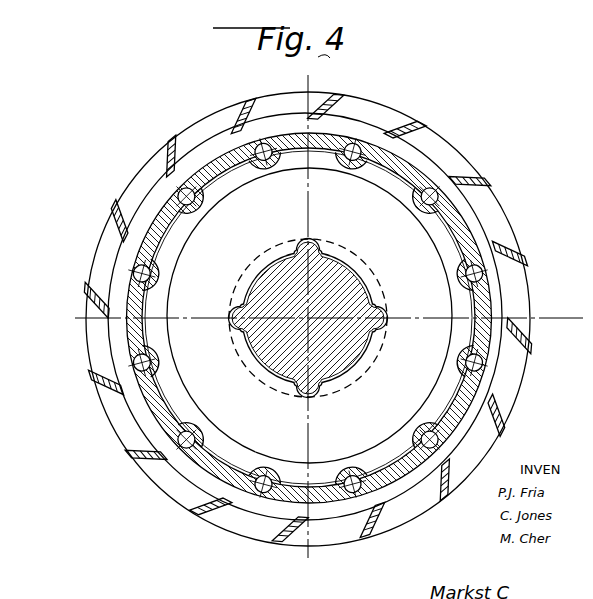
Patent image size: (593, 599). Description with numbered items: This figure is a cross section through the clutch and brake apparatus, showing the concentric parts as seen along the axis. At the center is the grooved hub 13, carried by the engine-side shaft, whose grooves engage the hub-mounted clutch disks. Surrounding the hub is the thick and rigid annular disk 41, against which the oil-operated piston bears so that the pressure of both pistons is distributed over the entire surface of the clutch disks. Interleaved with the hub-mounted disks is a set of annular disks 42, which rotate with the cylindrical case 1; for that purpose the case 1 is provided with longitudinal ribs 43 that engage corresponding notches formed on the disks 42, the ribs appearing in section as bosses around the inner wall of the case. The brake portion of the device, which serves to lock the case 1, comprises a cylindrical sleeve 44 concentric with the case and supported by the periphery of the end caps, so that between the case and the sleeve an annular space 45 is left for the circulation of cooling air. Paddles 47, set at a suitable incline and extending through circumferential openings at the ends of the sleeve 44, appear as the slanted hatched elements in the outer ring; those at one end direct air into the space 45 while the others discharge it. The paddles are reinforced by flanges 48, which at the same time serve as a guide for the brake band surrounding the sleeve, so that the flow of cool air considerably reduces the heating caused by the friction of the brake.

The cylindrical case 1 is at (465, 217).
The grooved hub 13 is at (342, 280).
The annular disk 41 is at (482, 363).
The annular disks 42 is at (162, 253).
The longitudinal ribs 43 is at (412, 180).
The cylindrical sleeve 44 is at (227, 224).
The annular space 45 is at (474, 300).
The paddles 47 is at (396, 125).
The flanges 48 is at (508, 232).